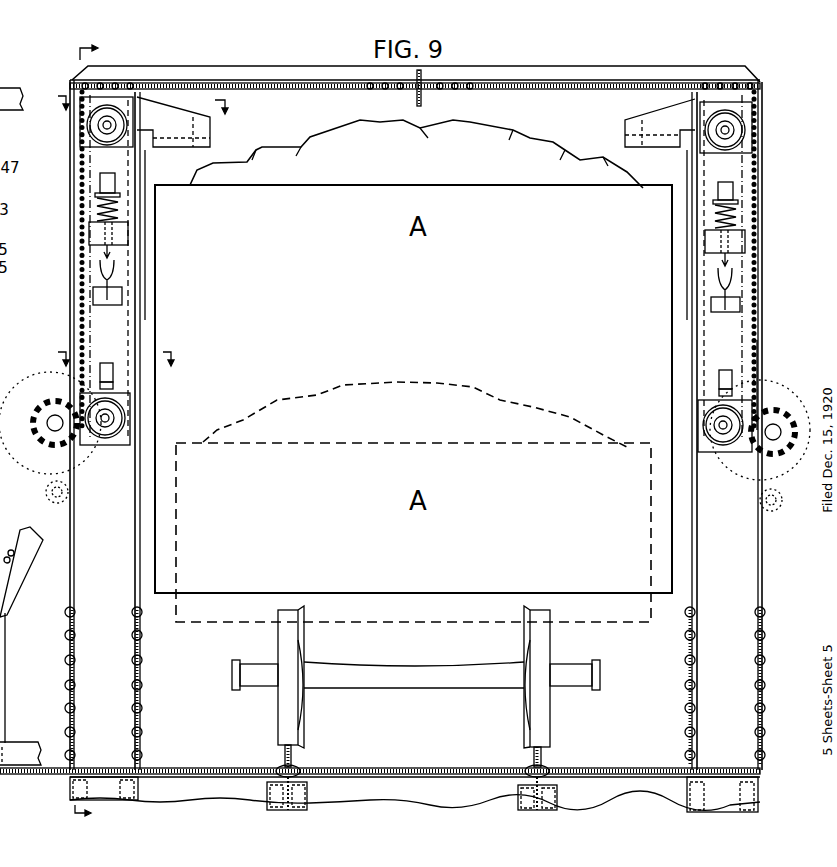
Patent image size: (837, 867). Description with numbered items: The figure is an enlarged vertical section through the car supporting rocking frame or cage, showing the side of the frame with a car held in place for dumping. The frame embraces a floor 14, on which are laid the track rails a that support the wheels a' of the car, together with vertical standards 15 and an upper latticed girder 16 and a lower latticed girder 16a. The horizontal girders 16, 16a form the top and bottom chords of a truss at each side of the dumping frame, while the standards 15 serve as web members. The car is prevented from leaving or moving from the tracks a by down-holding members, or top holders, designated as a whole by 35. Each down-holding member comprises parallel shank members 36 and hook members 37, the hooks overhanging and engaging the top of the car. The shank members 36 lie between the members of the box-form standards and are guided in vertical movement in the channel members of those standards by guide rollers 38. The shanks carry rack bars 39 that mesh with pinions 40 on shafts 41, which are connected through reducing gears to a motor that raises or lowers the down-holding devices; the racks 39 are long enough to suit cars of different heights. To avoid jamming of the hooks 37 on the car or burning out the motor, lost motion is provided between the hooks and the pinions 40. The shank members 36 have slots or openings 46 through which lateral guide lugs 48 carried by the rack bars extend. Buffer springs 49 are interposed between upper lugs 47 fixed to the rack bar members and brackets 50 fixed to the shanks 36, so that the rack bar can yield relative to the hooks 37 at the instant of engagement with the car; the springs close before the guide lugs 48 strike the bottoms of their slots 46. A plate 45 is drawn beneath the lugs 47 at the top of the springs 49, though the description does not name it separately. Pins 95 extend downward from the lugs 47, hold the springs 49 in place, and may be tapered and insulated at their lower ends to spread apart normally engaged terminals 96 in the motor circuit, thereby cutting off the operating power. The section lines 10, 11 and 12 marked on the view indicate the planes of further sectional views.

The section line 10- 10 is at (75, 423).
The section line 11- 11 is at (142, 100).
The section line 12- 12 is at (114, 355).
The floor 14 is at (604, 770).
The vertical standards 15 is at (140, 302).
The upper latticed girder 16 is at (137, 90).
The lower latticed girder 16a is at (760, 750).
The down-holding members 35 is at (758, 155).
The shank members 36 is at (118, 347).
The hook members 37 is at (170, 115).
The guide rollers 38 is at (93, 128).
The rack bars 39 is at (758, 368).
The pinions 40 is at (43, 447).
The shafts 41 is at (47, 421).
The spring seat plate 45 is at (120, 195).
The slots or openings 46 is at (113, 386).
The upper lugs 47 is at (115, 183).
The lateral guide lugs 48 is at (113, 372).
The buffer springs 49 is at (97, 210).
The brackets 50 is at (128, 237).
The pins 95 is at (105, 252).
The terminals 96 is at (114, 270).
The track rails a is at (412, 777).
The wheels a' is at (416, 677).